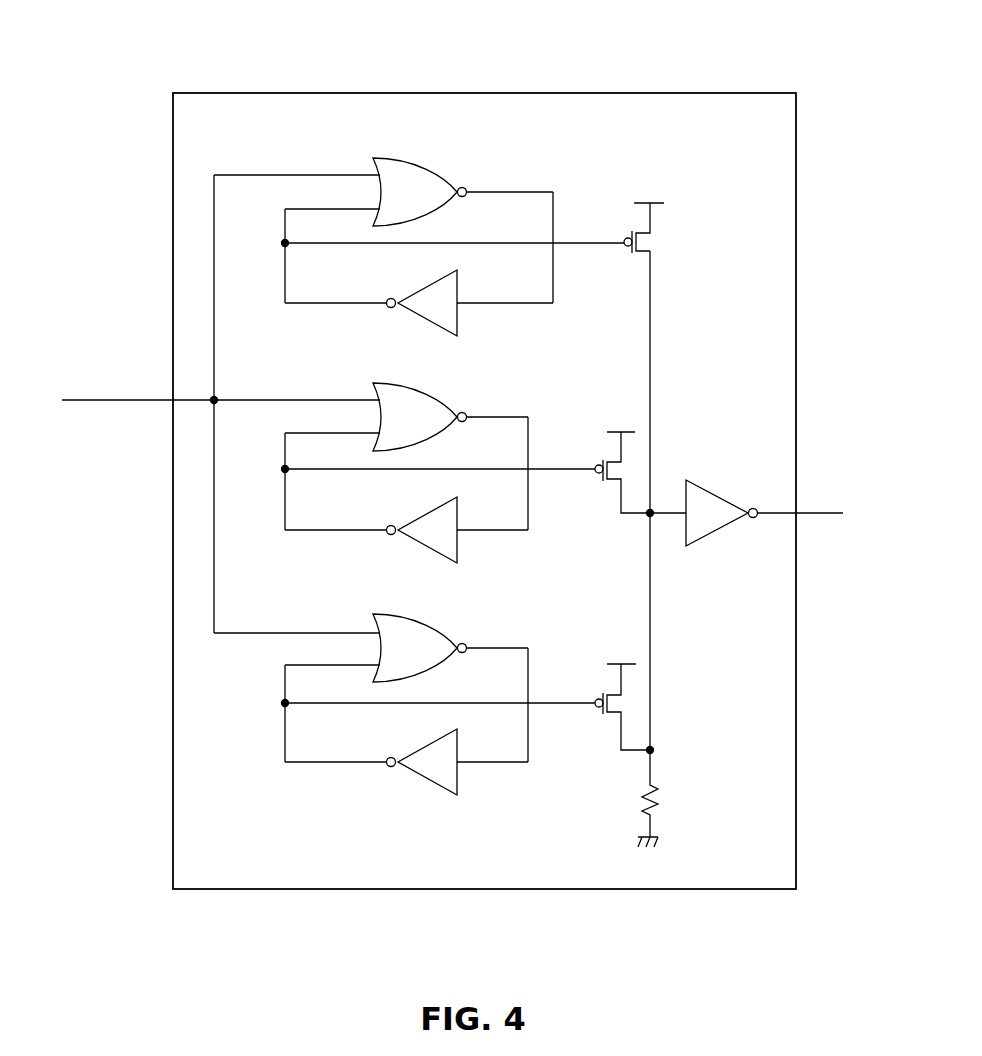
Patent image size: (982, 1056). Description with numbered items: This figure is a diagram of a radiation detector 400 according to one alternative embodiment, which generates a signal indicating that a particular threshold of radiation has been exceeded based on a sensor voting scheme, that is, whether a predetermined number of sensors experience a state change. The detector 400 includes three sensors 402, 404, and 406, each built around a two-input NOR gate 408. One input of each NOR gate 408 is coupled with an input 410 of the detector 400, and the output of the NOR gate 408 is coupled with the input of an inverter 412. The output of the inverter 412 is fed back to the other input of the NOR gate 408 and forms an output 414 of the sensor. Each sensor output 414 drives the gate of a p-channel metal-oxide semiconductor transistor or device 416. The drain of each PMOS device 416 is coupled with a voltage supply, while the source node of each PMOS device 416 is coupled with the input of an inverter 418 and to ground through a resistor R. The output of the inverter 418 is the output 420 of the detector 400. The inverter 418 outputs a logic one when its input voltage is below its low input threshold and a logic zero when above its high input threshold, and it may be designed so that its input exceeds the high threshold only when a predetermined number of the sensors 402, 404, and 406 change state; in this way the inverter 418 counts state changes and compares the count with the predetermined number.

The radiation detector 400 is at (646, 92).
The sensor 402 is at (492, 156).
The sensor 404 is at (492, 363).
The sensor 406 is at (492, 597).
The two-input NOR gate 408 is at (413, 159).
The input 410 is at (92, 399).
The inverter 412 is at (433, 285).
The output 414 is at (479, 242).
The p-channel metal-oxide semiconductor (PMOS) transistor 416 is at (666, 244).
The inverter 418 is at (725, 496).
The output 420 is at (838, 512).
The resistor R is at (668, 804).